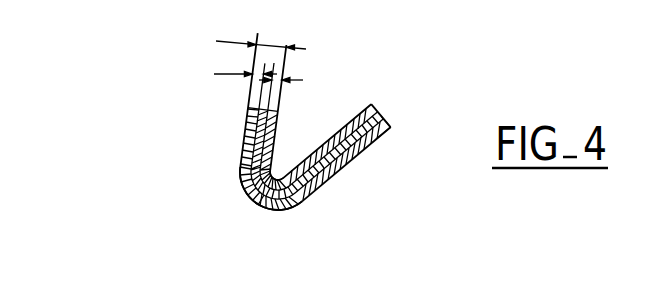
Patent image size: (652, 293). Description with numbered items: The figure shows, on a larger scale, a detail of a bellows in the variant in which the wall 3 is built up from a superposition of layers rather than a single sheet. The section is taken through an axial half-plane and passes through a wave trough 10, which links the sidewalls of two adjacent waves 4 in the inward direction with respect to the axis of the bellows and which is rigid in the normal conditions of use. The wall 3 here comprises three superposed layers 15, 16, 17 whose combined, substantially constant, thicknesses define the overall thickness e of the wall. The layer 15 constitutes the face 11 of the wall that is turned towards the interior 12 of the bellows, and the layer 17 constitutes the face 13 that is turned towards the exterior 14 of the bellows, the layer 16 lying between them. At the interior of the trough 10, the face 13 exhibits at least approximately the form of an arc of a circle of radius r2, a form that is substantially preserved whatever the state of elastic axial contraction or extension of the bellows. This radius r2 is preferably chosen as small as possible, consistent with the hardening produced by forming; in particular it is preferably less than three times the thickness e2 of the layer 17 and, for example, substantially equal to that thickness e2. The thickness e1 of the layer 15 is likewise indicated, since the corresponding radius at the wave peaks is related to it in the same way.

The tubular wall 3 is at (240, 168).
The wave 4 is at (244, 131).
The wave trough 10 is at (277, 211).
The face turned towards the interior 11 is at (357, 158).
The interior of the bellows 12 is at (374, 234).
The face turned towards the exterior 13 is at (371, 103).
The exterior of the bellows 14 is at (342, 120).
The first layer 15 is at (391, 127).
The second layer 16 is at (386, 115).
The third layer 17 is at (381, 107).
The thickness of the wall e is at (259, 27).
The thickness of layer 15 e1 is at (243, 62).
The thickness of layer 17 e2 is at (291, 71).
The radius of curvature at the wave trough r2 is at (284, 180).